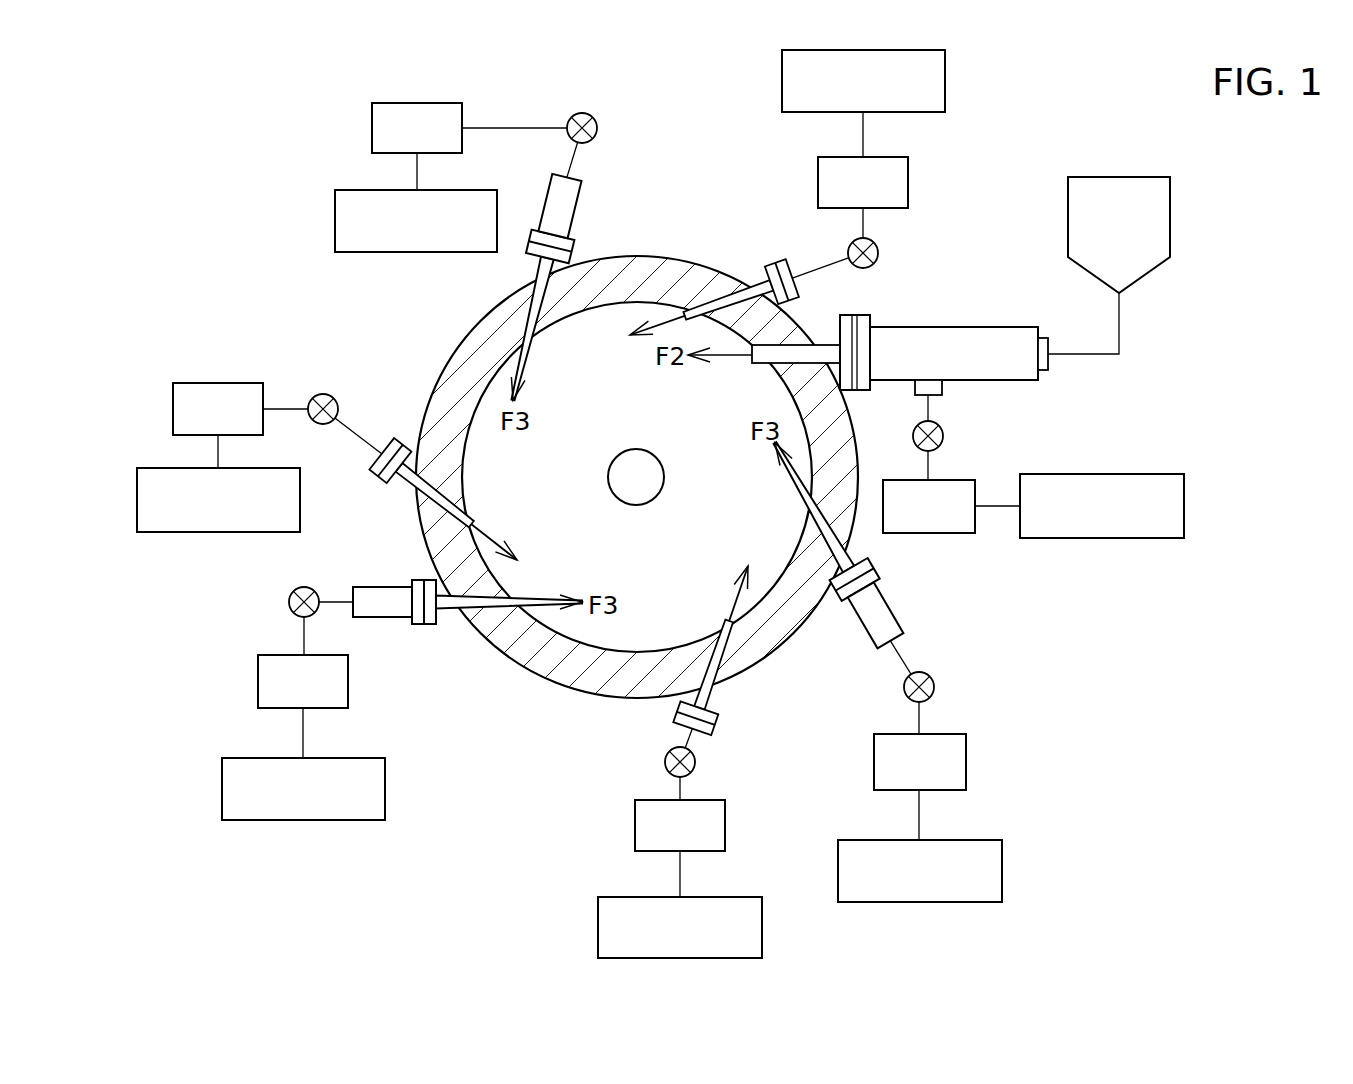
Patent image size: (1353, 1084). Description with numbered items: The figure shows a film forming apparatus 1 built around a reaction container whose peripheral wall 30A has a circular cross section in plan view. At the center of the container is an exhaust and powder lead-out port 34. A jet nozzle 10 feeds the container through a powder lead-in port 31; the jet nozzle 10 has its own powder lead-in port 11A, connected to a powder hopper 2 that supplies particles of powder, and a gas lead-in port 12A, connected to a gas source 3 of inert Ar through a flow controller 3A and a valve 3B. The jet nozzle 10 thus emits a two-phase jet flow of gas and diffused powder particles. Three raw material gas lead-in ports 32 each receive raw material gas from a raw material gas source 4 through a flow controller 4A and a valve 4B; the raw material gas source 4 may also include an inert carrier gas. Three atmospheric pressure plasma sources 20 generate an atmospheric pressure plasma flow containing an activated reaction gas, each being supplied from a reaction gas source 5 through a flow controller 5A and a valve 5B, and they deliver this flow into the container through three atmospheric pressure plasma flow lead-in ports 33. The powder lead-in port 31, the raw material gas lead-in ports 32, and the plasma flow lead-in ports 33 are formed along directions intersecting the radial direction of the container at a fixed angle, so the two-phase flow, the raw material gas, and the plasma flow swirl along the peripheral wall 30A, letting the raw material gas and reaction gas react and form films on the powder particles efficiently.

The film forming apparatus 1 is at (1057, 102).
The powder hopper 2 is at (1118, 177).
The gas source 3 is at (1100, 474).
The flow controller 3A is at (930, 534).
The valve 3B is at (944, 437).
The raw material gas source 4 is at (945, 77).
The flow controller 4A is at (908, 183).
The valve 4B is at (878, 253).
The reaction gas source 5 is at (335, 222).
The flow controller 5A is at (372, 130).
The valve 5B is at (582, 113).
The jet nozzle 10 is at (983, 327).
The powder lead-in port 11A is at (1042, 338).
The gas lead-in port 12A is at (945, 387).
The atmospheric pressure plasma source 20 is at (573, 218).
The peripheral wall 30A is at (625, 641).
The powder lead-in port 31 is at (772, 373).
The raw material gas lead-in port 32 is at (717, 283).
The atmospheric pressure plasma flow lead-in port 33 is at (497, 306).
The exhaust and powder lead-out port 34 is at (630, 449).